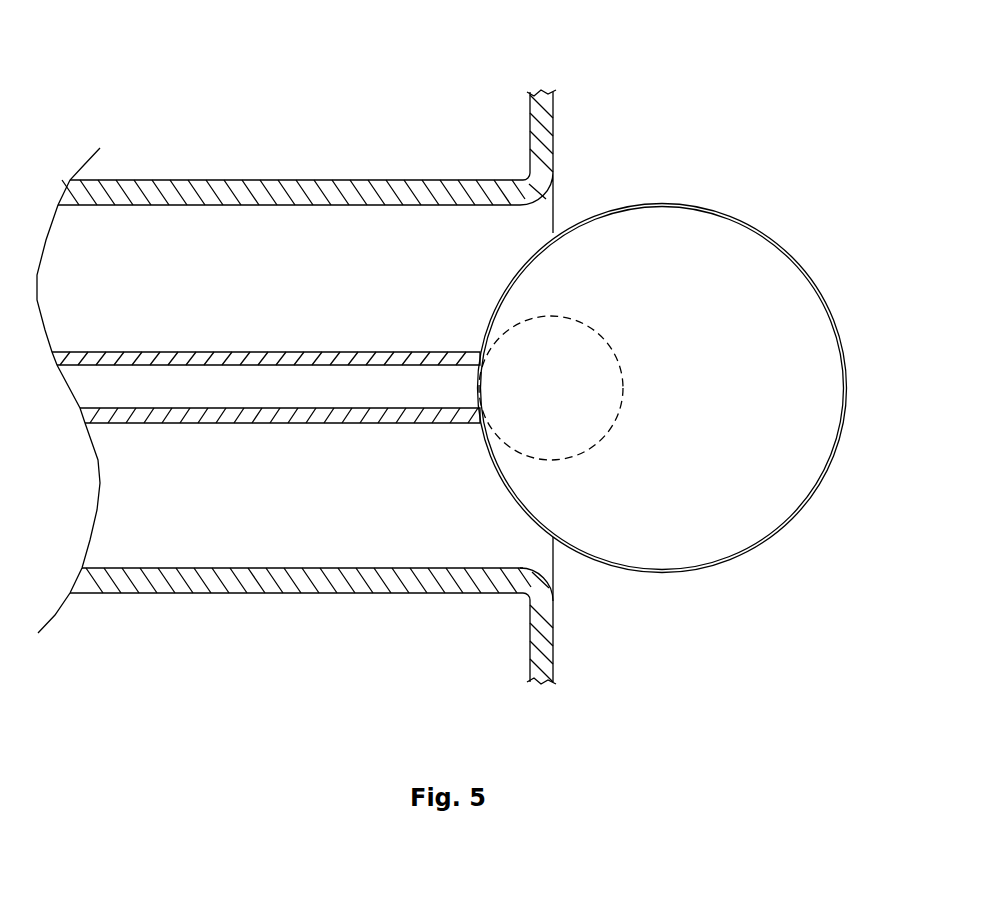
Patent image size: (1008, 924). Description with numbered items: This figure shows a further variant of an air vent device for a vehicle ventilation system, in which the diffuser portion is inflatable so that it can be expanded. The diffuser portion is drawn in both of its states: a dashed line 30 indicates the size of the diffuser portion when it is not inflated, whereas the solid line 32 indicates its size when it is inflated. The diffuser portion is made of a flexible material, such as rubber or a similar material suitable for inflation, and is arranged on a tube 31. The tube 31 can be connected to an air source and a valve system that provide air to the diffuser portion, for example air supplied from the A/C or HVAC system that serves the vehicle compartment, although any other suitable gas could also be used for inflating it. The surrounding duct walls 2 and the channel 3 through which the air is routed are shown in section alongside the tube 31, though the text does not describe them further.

The tubular body 2 is at (362, 180).
The lumen 3 is at (155, 295).
The tube 31 is at (243, 352).
The dashed line 30 is at (596, 325).
The solid line 32 is at (808, 275).